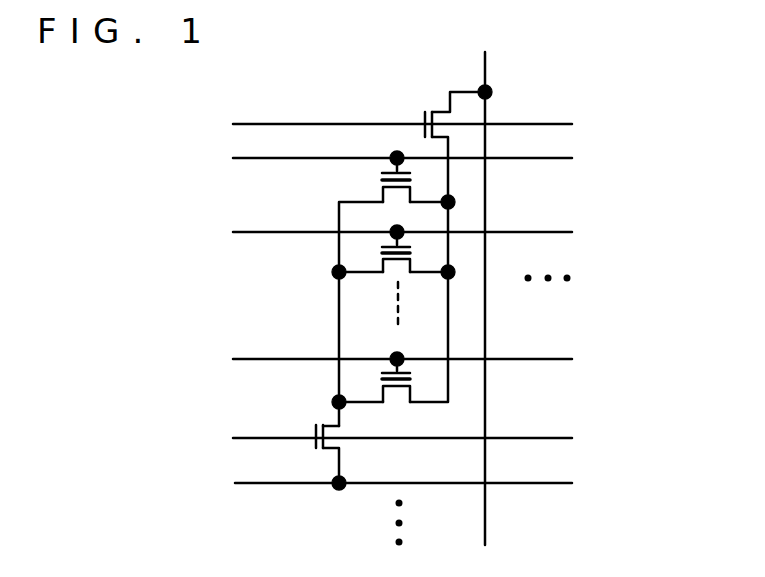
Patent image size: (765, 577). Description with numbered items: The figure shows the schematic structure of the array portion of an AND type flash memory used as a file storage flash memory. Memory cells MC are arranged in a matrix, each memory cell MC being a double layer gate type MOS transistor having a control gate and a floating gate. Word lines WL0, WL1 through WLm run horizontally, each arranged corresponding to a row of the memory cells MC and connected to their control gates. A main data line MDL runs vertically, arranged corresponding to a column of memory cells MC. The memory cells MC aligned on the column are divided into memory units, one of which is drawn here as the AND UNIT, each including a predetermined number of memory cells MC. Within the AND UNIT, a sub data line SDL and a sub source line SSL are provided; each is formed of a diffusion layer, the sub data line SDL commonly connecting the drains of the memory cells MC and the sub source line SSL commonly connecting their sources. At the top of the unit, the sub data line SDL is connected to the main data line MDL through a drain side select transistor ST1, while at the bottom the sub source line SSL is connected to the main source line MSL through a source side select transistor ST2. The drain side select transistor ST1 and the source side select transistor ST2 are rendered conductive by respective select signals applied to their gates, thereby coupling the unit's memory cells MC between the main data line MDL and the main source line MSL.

The main data line MDL is at (488, 72).
The drain side select transistor ST1 is at (432, 106).
The word line WL0 is at (424, 158).
The word line WL1 is at (423, 232).
The word line WLm is at (425, 358).
The memory cell MC is at (378, 177).
The sub source line SSL is at (339, 322).
The sub data line SDL is at (449, 387).
The source side select transistor ST2 is at (312, 428).
The main source line MSL is at (266, 481).
The AND unit AND UNIT is at (214, 261).